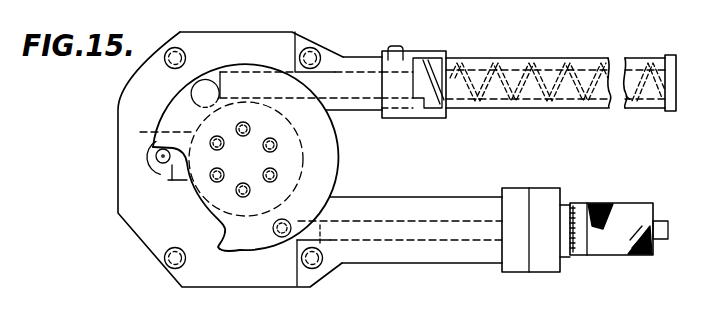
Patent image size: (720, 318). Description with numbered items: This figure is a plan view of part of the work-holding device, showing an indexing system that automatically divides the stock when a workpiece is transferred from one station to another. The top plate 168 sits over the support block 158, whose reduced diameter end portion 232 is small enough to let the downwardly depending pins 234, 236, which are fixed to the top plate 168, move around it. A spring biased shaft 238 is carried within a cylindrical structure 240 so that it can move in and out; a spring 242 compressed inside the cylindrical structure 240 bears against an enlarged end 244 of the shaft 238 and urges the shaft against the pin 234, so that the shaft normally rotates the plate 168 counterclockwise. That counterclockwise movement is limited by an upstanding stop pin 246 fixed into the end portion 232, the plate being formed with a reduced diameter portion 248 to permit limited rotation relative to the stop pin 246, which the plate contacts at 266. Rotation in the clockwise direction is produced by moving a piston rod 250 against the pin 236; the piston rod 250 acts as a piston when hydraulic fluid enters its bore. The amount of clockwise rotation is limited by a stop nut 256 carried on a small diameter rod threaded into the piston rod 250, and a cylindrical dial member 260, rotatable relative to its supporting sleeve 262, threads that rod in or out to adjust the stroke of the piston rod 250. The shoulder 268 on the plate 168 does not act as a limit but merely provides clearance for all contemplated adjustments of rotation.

The support block 158 is at (168, 181).
The top plate 168 is at (332, 175).
The reduced diameter end portion 232 is at (337, 137).
The pin 234 is at (200, 76).
The pin 236 is at (280, 246).
The spring biased shaft 238 is at (236, 63).
The cylindrical structure 240 is at (581, 58).
The spring 242 is at (516, 53).
The enlarged end 244 is at (456, 53).
The stop pin 246 is at (151, 169).
The reduced diameter portion 248 is at (190, 198).
The piston rod 250 is at (377, 244).
The stop nut 256 is at (659, 221).
The dial member 260 is at (604, 261).
The supporting sleeve 262 is at (540, 273).
The contact point 266 is at (246, 159).
The shoulder 268 is at (223, 239).